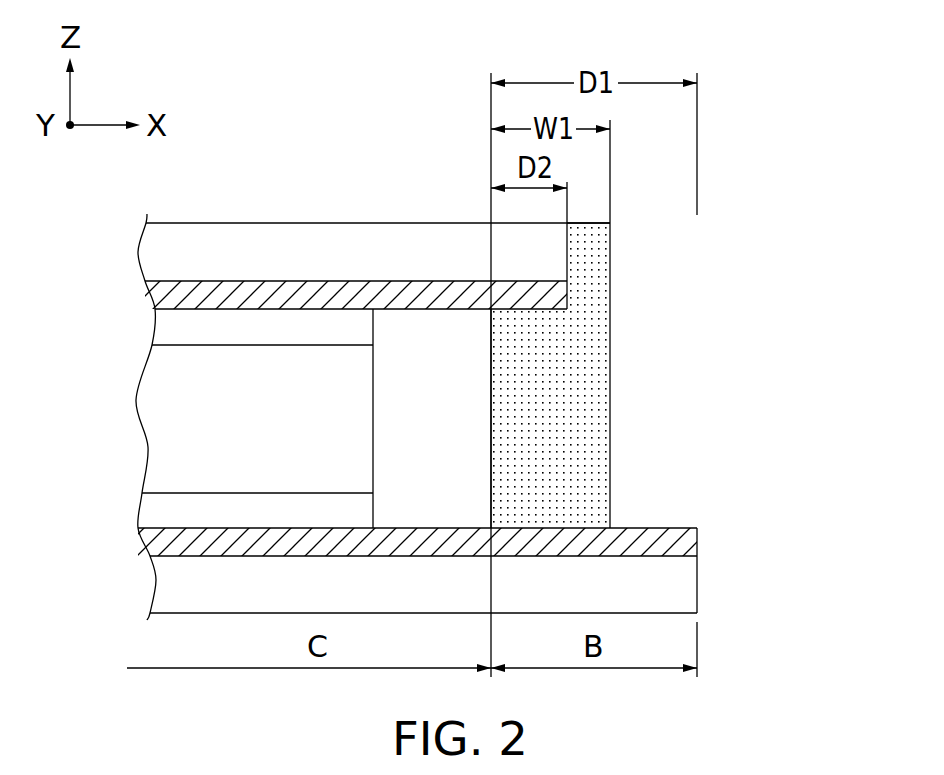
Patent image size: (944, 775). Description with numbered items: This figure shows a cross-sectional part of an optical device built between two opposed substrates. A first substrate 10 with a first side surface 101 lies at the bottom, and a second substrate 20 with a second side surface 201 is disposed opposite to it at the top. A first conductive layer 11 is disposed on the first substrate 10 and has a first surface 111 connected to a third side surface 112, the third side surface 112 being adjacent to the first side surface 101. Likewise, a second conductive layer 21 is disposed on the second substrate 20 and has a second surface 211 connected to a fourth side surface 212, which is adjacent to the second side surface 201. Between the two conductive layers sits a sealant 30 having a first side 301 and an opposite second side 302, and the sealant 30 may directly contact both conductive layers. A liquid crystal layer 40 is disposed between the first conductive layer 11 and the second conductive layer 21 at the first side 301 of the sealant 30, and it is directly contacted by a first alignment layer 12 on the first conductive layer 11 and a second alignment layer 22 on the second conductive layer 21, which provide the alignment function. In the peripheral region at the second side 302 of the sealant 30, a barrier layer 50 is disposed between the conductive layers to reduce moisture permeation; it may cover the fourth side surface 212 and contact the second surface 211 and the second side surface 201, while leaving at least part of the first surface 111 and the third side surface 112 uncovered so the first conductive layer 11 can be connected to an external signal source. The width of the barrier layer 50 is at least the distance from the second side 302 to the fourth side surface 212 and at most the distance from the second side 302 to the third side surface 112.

The first substrate 10 is at (672, 576).
The first side surface 101 is at (697, 597).
The first conductive layer 11 is at (773, 475).
The first surface 111 is at (668, 527).
The third side surface 112 is at (697, 542).
The first alignment layer 12 is at (145, 510).
The second substrate 20 is at (146, 255).
The second side surface 201 is at (568, 235).
The second conductive layer 21 is at (683, 272).
The second surface 211 is at (548, 310).
The fourth side surface 212 is at (568, 293).
The second alignment layer 22 is at (155, 330).
The sealant 30 is at (468, 378).
The first side 301 is at (373, 413).
The second side 302 is at (492, 422).
The liquid crystal layer 40 is at (150, 422).
The barrier layer 50 is at (583, 252).